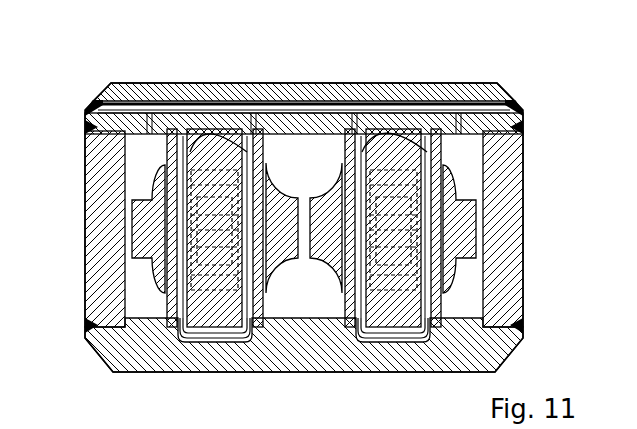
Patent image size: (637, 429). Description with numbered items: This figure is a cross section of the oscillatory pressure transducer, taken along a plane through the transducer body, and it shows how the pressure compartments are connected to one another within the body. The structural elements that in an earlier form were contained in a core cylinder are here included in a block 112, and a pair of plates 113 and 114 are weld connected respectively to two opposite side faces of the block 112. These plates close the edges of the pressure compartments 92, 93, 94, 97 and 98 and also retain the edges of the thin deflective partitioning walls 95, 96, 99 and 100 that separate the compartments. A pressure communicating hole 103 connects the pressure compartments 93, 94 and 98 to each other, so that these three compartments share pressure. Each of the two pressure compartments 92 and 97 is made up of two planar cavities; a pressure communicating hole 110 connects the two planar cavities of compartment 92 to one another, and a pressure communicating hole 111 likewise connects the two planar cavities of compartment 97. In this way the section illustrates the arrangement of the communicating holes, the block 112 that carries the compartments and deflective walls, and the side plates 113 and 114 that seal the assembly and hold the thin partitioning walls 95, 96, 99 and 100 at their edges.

The pressure compartment 92 is at (188, 112).
The pressure compartment 93 is at (143, 162).
The pressure compartment 94 is at (313, 155).
The thin deflective partitioning wall 95 is at (156, 112).
The thin deflective partitioning wall 96 is at (248, 122).
The pressure compartment 97 is at (380, 113).
The pressure compartment 98 is at (470, 160).
The thin deflective partitioning wall 99 is at (355, 120).
The thin deflective partitioning wall 100 is at (441, 114).
The pressure communicating hole 103 is at (285, 124).
The pressure communicating hole 110 is at (210, 343).
The pressure communicating hole 111 is at (387, 343).
The block 112 is at (100, 237).
The plate 113 is at (464, 117).
The plate 114 is at (120, 343).